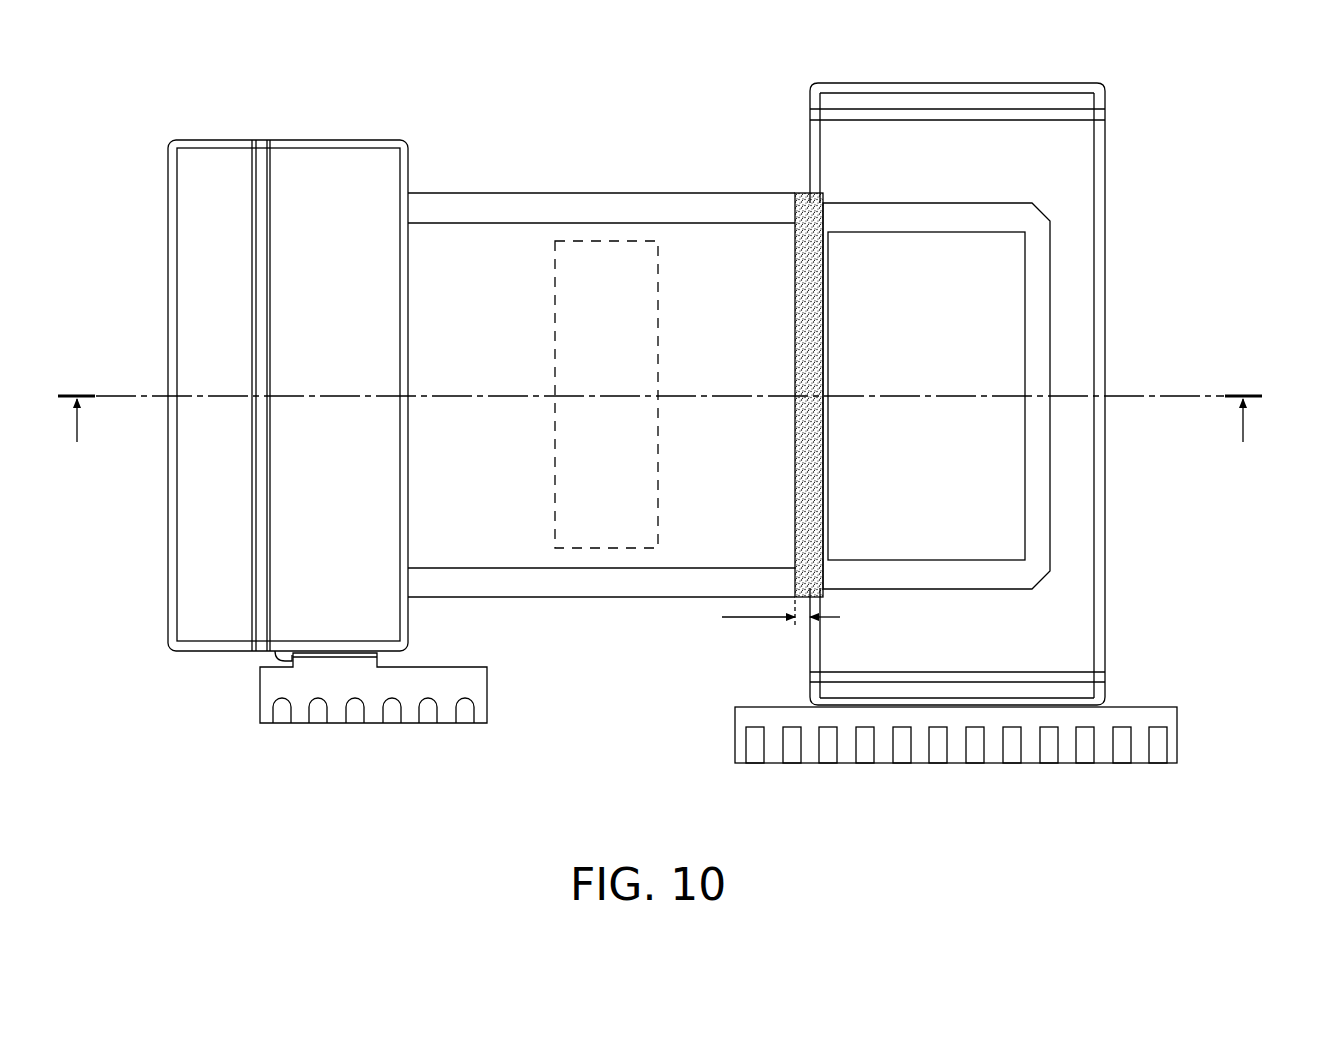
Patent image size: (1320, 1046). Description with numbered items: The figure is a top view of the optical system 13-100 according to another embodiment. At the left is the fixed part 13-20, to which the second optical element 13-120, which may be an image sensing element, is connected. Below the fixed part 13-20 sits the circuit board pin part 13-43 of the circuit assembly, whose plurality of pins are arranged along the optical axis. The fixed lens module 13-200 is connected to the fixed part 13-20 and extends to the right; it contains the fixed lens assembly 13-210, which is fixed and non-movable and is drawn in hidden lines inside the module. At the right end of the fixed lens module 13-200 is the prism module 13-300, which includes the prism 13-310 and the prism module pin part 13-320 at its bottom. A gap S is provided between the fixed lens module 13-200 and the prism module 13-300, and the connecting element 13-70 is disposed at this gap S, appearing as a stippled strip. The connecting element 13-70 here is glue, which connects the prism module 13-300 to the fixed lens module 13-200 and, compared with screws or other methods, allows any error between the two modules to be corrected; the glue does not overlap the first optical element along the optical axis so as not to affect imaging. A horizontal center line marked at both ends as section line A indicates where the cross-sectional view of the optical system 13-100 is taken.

The optical system 100 is at (92, 51).
The second optical element 120 is at (218, 172).
The fixed part 20 is at (338, 172).
The fixed lens module 200 is at (480, 240).
The fixed lens assembly 210 is at (622, 241).
The connecting element 70 is at (800, 193).
The prism module 300 is at (1080, 158).
The prism 310 is at (996, 312).
The circuit board pin part 43 is at (472, 683).
The prism module pin part 320 is at (1170, 718).
The gap S is at (781, 625).
The line 13-A-13- A is at (656, 434).